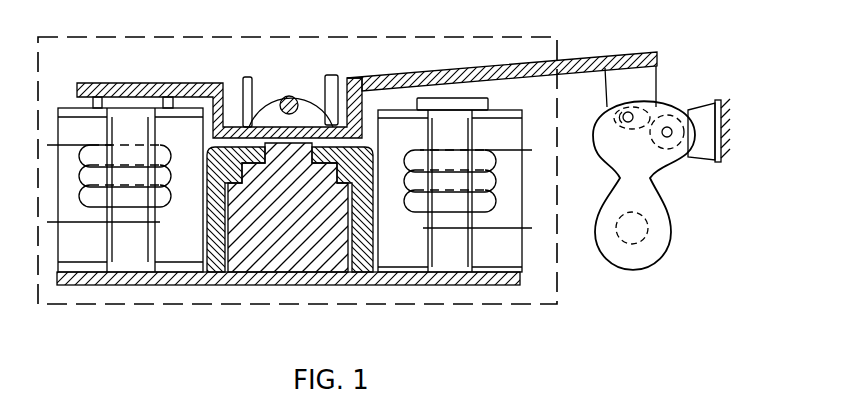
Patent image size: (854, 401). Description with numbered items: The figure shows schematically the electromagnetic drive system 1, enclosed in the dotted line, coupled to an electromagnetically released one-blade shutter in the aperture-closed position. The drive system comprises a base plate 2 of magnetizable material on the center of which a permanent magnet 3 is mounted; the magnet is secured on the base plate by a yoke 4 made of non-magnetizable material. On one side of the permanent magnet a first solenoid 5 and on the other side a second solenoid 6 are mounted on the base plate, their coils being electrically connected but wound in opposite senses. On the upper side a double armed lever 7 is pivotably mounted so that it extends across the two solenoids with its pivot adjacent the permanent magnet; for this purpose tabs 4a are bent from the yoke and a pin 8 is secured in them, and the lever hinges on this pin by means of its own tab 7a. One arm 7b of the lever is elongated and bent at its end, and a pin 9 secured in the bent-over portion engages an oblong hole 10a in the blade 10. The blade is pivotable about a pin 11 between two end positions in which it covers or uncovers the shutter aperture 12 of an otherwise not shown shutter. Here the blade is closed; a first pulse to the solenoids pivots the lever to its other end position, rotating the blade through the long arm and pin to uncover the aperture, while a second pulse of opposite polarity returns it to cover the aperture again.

The drive system 1 is at (480, 32).
The base plate 2 is at (92, 277).
The permanent magnet 3 is at (260, 243).
The yoke 4 is at (212, 255).
The tabs 4a is at (247, 78).
The first solenoid 5 is at (138, 258).
The second solenoid 6 is at (450, 253).
The double armed lever 7 is at (403, 77).
The tab 7a is at (314, 93).
The arm 7b is at (566, 66).
The pin 8 is at (290, 96).
The pin 9 is at (637, 112).
The blade 10 is at (650, 245).
The oblong hole 10a is at (650, 108).
The pin 11 is at (667, 132).
The shutter aperture 12 is at (637, 244).